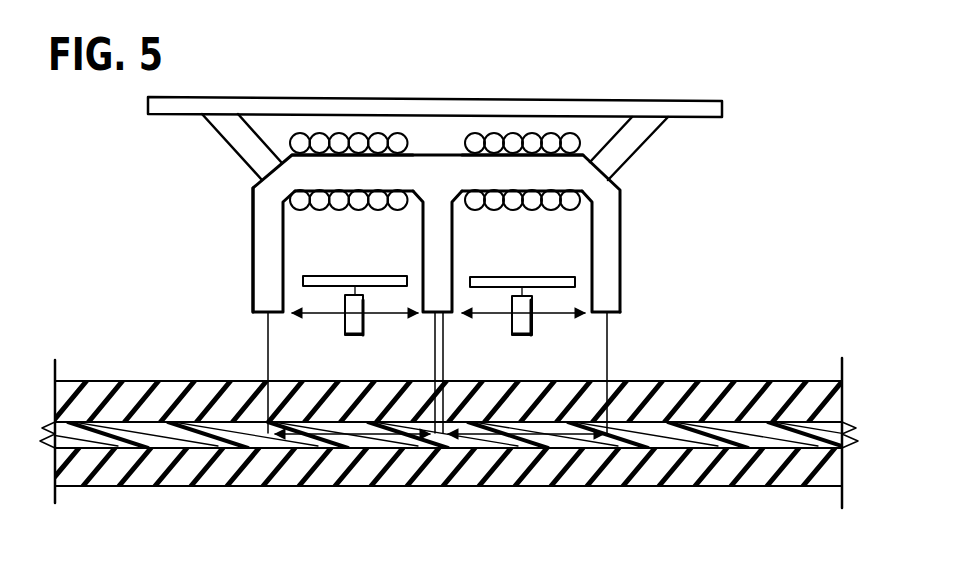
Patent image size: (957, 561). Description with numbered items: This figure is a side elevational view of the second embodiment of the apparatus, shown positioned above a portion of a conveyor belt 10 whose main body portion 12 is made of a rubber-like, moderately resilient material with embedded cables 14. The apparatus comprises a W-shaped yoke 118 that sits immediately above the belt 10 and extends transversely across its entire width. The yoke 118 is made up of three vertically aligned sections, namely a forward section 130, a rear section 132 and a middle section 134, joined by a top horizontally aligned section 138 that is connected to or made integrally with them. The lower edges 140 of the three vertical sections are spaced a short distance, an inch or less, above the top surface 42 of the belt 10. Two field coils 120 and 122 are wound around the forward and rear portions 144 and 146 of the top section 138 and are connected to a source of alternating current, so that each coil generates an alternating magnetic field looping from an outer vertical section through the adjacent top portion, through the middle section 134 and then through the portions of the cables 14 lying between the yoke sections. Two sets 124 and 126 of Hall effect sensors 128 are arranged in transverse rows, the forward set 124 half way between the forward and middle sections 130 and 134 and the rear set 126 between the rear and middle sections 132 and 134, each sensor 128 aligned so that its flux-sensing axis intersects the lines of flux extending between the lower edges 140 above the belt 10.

The conveyor belt 10 is at (727, 374).
The main body portion 12 is at (763, 428).
The cables 14 is at (772, 446).
The top surface 42 is at (733, 393).
The yoke 118 is at (591, 136).
The field coil 120 is at (358, 137).
The field coil 122 is at (513, 135).
The forward set of Hall effect sensors 124 is at (336, 323).
The rear set of Hall effect sensors 126 is at (541, 321).
The Hall effect sensor 128 is at (348, 337).
The forward section 130 is at (262, 246).
The rear section 132 is at (607, 235).
The middle section 134 is at (437, 239).
The top horizontally aligned section 138 is at (440, 168).
The lower edges 140 is at (255, 315).
The forward portion of top section 144 is at (325, 160).
The rear portion of top section 146 is at (535, 168).